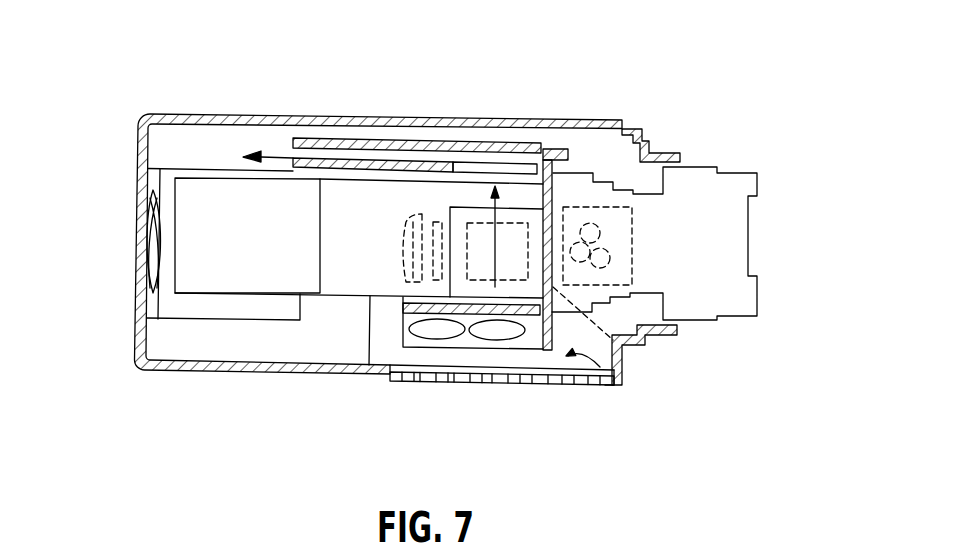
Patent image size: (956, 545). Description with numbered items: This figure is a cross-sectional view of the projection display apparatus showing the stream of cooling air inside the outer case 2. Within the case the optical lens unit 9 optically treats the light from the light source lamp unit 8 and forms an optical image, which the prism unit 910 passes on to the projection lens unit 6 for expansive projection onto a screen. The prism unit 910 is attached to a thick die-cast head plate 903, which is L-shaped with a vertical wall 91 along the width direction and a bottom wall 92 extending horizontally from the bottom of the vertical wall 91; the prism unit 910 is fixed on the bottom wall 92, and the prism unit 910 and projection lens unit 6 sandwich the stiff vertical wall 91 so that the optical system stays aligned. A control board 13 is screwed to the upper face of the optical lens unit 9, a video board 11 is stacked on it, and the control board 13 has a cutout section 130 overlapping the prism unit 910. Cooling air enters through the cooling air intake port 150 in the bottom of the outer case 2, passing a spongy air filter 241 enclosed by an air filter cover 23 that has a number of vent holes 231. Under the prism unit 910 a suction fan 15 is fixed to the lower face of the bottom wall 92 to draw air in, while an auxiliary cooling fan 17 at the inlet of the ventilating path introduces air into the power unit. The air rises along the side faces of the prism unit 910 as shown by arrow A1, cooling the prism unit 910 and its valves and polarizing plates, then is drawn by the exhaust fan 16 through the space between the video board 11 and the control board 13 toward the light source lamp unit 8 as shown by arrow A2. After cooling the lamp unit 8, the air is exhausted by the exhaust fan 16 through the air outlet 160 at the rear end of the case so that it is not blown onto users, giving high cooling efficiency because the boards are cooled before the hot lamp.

The outer case 2 is at (153, 372).
The projection lens unit 6 is at (723, 157).
The light source lamp unit 8 is at (188, 198).
The optical lens unit 9 is at (397, 180).
The video board 11 is at (398, 170).
The control board 13 is at (369, 157).
The suction fan 15 is at (403, 337).
The exhaust fan 16 is at (150, 292).
The auxiliary cooling fan 17 is at (632, 255).
The air filter cover 23 is at (427, 384).
The vertical wall 91 is at (558, 232).
The bottom wall 92 is at (403, 320).
The cutout section 130 is at (478, 160).
The cooling air intake port 150 is at (607, 375).
The air outlet 160 is at (137, 244).
The vent holes 231 is at (500, 385).
The spongy air filter 241 is at (543, 372).
The head plate 903 is at (560, 164).
The prism unit 910 is at (628, 358).
The arrow A1 is at (497, 241).
The arrow A2 is at (253, 153).